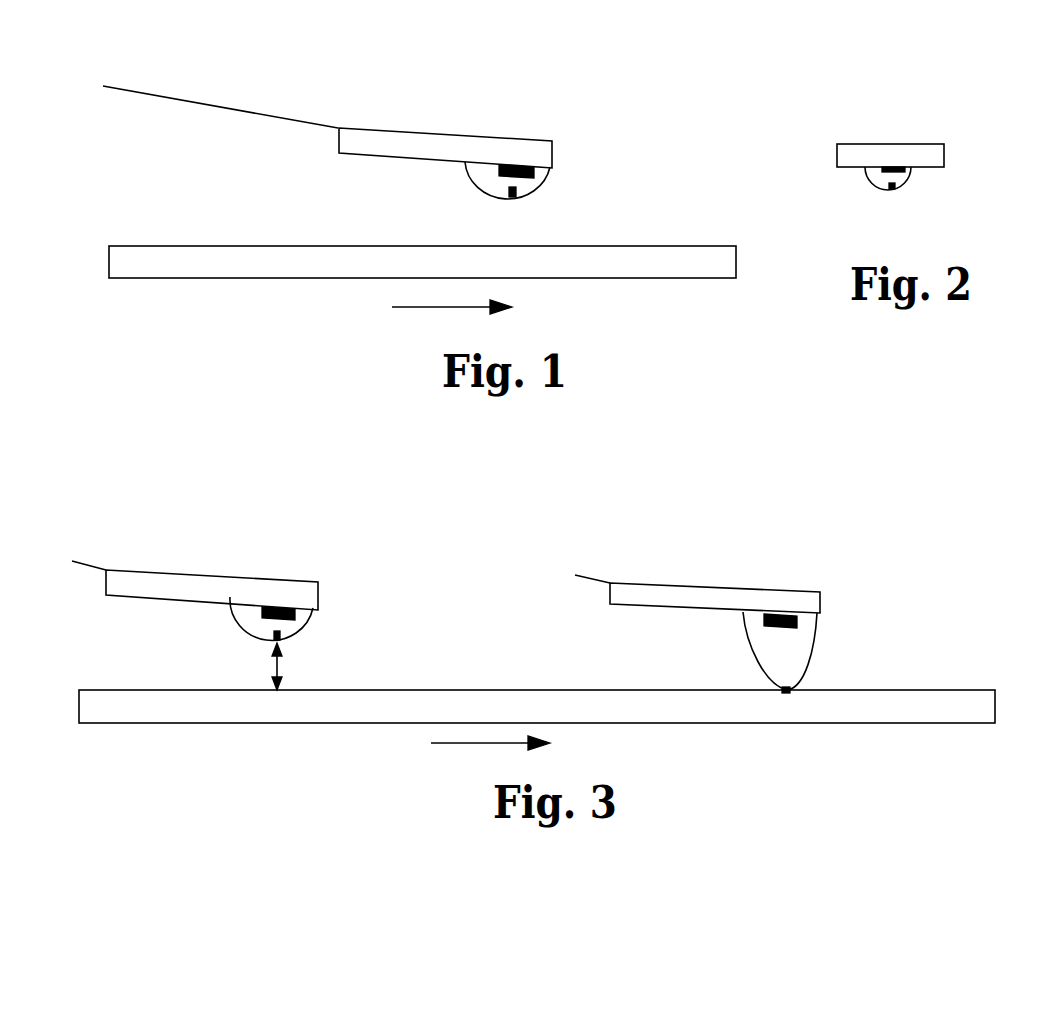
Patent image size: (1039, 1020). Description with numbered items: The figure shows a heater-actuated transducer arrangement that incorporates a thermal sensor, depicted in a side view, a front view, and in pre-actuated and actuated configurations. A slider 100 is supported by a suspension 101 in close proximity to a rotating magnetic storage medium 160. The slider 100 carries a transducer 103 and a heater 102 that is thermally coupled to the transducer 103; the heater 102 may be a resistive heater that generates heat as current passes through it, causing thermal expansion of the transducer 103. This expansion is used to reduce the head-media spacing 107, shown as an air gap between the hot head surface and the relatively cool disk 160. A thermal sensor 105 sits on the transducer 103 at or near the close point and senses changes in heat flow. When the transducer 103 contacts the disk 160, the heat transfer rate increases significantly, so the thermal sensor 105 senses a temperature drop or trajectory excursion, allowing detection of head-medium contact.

In FIG. 1, the slider 100 is at (435, 130).
In FIG. 2, the slider 100 is at (862, 143).
In FIG. 3, the slider 100 is at (222, 572).
In FIG. 1, the suspension 101 is at (206, 104).
In FIG. 3, the suspension 101 is at (79, 562).
In FIG. 1, the heater 102 is at (540, 173).
In FIG. 2, the heater 102 is at (910, 170).
In FIG. 3, the heater 102 is at (258, 613).
In FIG. 1, the transducer 103 is at (468, 178).
In FIG. 2, the transducer 103 is at (868, 178).
In FIG. 3, the transducer 103 is at (310, 613).
In FIG. 1, the thermal sensor 105 is at (518, 197).
In FIG. 2, the thermal sensor 105 is at (896, 190).
In FIG. 3, the thermal sensor 105 is at (274, 637).
In FIG. 3, the head-media spacing 107 is at (281, 660).
In FIG. 1, the magnetic storage medium 160 is at (690, 256).
In FIG. 3, the magnetic storage medium 160 is at (893, 716).